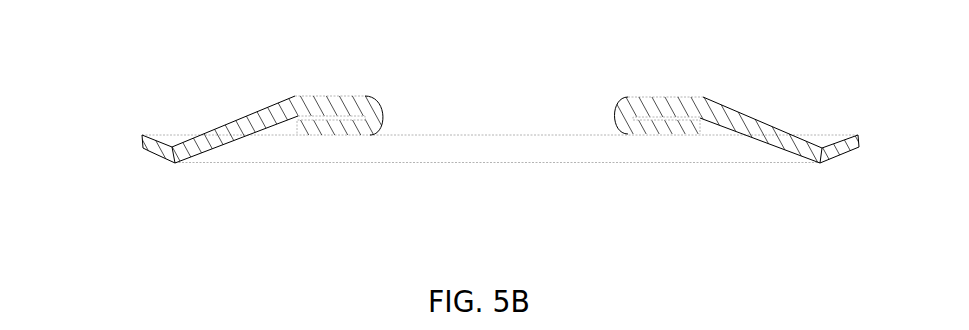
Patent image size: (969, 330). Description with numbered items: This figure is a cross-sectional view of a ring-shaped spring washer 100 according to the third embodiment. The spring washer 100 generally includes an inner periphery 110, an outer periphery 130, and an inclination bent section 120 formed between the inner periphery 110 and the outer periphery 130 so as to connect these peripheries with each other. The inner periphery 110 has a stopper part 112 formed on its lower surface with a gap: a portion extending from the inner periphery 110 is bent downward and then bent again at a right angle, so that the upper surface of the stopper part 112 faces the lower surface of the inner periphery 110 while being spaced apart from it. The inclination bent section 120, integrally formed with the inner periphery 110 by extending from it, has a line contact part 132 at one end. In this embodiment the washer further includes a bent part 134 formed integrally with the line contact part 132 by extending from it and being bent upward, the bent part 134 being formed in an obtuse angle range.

The spring washer 100 is at (221, 62).
The inner periphery 110 is at (377, 100).
The stopper part 112 is at (340, 136).
The inclination bent section 120 is at (233, 139).
The outer periphery 130 is at (137, 142).
The line contact part 132 is at (177, 163).
The bent part 134 is at (149, 151).